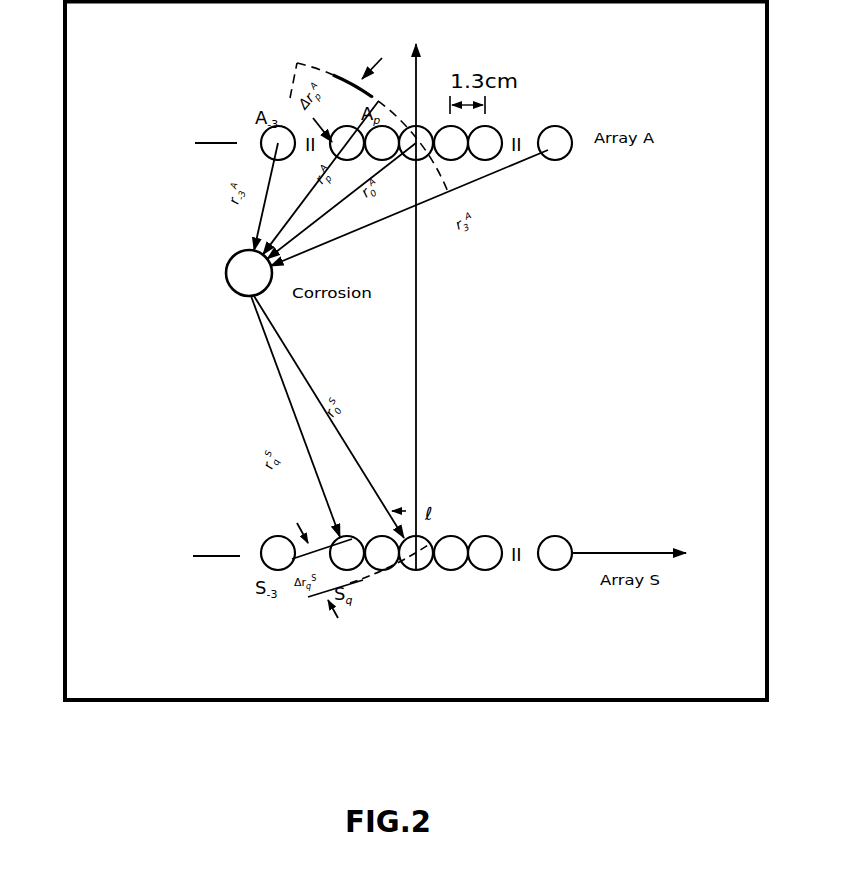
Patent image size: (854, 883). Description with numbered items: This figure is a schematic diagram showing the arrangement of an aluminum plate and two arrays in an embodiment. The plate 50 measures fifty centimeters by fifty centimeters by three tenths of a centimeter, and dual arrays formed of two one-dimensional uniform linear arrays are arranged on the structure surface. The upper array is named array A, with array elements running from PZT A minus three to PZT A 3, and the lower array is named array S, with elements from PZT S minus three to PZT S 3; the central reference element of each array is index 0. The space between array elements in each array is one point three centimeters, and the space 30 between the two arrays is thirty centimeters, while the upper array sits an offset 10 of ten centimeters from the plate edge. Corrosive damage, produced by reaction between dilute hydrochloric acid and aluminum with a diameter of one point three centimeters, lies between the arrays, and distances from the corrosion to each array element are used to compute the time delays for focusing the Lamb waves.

The aluminum plate (50cm x 50cm) 50 is at (58, 2).
The 10cm offset of array A from plate edge 10 is at (215, 3).
The l=30cm distance between arrays 30 is at (215, 146).
The central sensors A0 and S0 on y axis 0 is at (421, 321).
The end sensors A3 and S3 with x axis 3 is at (621, 355).